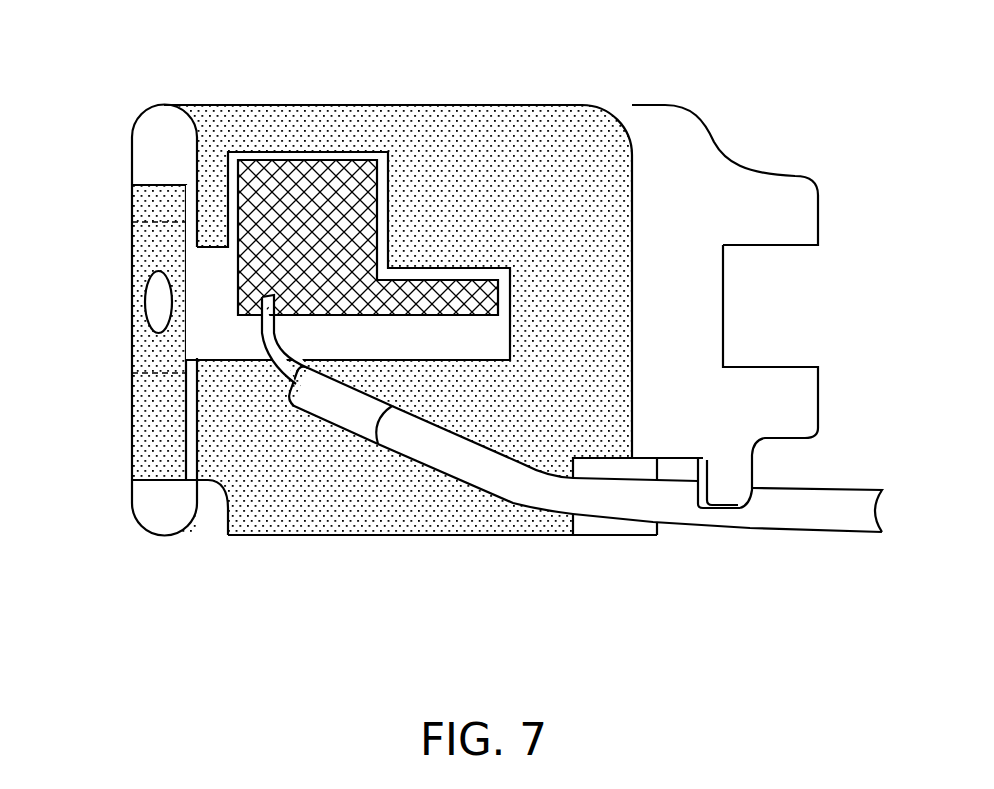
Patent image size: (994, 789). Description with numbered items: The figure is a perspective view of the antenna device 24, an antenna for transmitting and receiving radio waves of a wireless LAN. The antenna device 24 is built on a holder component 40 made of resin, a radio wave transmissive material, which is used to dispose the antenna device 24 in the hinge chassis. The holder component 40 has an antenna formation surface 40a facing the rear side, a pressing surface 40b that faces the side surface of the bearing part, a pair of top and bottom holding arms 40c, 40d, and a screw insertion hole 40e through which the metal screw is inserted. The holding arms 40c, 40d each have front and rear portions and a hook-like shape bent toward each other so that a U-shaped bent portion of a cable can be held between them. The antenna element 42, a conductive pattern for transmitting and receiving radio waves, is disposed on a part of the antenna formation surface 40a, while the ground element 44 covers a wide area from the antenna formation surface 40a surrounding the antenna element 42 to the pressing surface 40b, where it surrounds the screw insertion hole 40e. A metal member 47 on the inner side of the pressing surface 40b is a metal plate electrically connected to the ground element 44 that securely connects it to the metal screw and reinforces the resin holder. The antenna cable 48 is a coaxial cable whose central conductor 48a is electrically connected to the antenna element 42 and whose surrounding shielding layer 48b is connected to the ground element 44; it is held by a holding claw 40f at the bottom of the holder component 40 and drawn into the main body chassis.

The antenna device 24 is at (78, 54).
The holder component 40 is at (643, 316).
The antenna formation surface 40a is at (393, 490).
The pressing surface 40b is at (156, 151).
The top holding arm 40c is at (795, 218).
The bottom holding arm 40d is at (795, 396).
The screw insertion hole 40e is at (116, 332).
The holding claw 40f is at (724, 492).
The antenna element 42 is at (310, 178).
The ground element 44 is at (348, 291).
The metal member 47 is at (160, 374).
The antenna cable 48 is at (555, 449).
The central conductor 48a is at (266, 336).
The shielding layer 48b is at (345, 403).